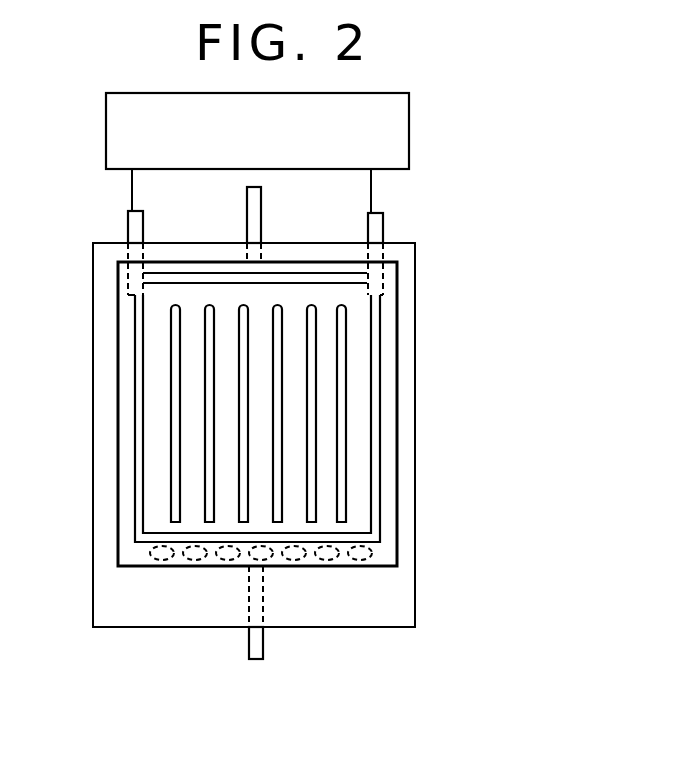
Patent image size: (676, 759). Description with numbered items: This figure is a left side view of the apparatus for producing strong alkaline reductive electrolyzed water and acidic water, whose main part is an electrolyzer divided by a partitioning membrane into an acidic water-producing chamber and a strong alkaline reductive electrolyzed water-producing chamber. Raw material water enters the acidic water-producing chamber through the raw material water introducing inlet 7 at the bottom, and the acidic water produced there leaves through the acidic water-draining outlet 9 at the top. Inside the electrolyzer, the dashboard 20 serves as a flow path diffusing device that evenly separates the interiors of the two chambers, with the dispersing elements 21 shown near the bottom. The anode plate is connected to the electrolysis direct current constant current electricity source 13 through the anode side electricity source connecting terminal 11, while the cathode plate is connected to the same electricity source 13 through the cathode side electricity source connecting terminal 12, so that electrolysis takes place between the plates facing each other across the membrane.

The electrolysis direct current constant current electricity source 13 is at (395, 123).
The anode side electricity source connecting terminal 11 is at (140, 222).
The cathode side electricity source connecting terminal 12 is at (377, 224).
The acidic water-draining outlet 9 is at (250, 195).
The dashboard 20 is at (342, 385).
The gas bubbling holes 21 is at (372, 553).
The raw material water introducing inlet 7 is at (258, 645).